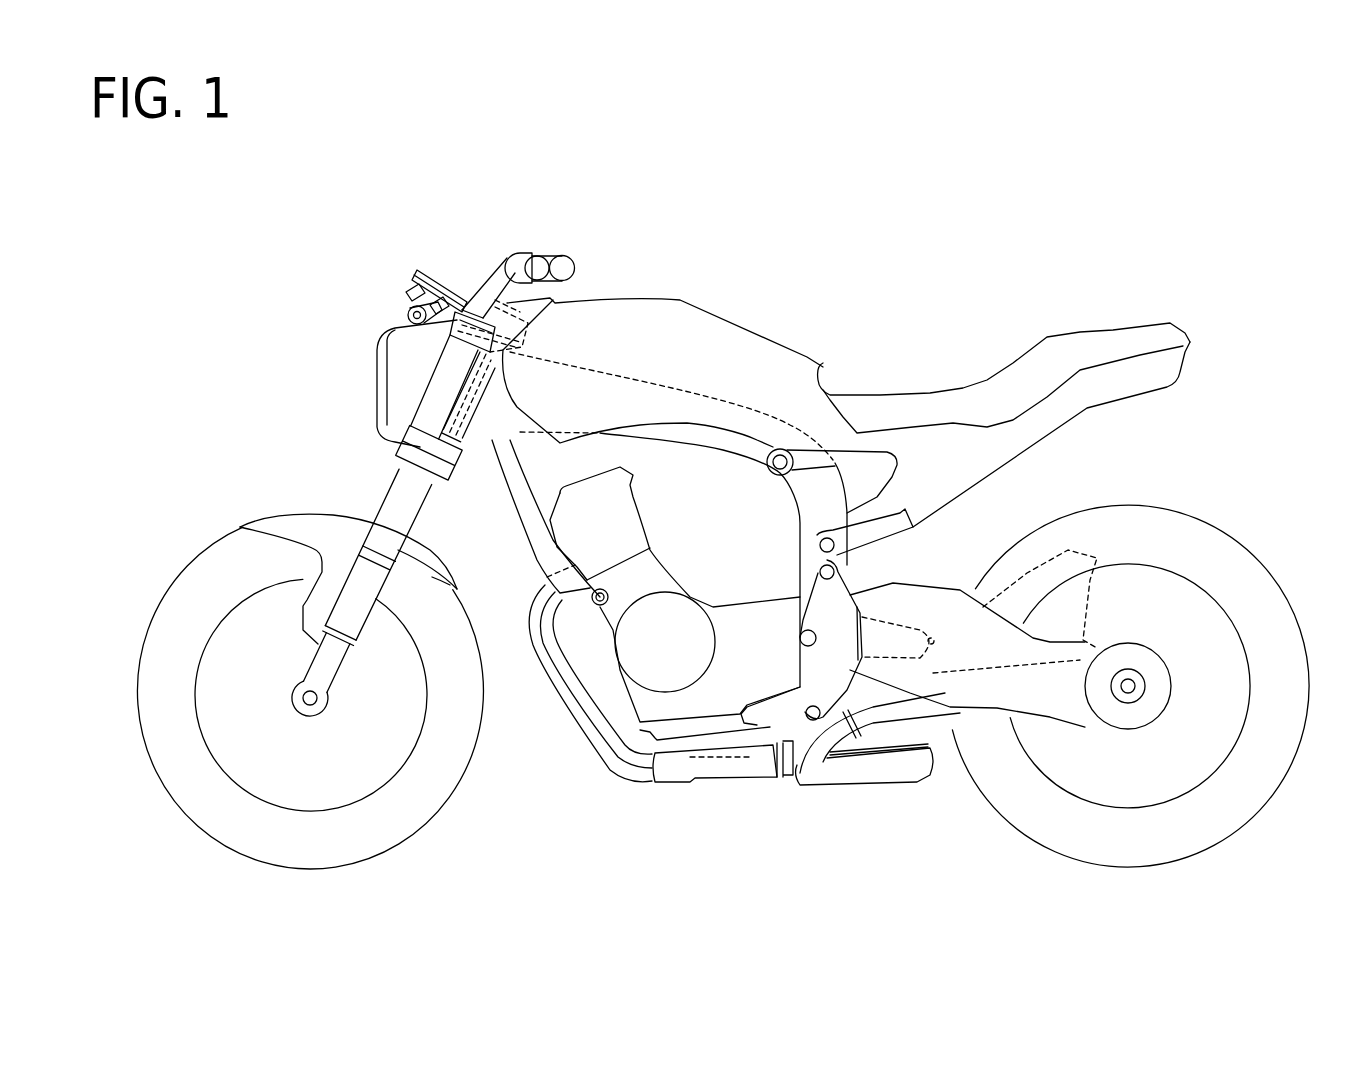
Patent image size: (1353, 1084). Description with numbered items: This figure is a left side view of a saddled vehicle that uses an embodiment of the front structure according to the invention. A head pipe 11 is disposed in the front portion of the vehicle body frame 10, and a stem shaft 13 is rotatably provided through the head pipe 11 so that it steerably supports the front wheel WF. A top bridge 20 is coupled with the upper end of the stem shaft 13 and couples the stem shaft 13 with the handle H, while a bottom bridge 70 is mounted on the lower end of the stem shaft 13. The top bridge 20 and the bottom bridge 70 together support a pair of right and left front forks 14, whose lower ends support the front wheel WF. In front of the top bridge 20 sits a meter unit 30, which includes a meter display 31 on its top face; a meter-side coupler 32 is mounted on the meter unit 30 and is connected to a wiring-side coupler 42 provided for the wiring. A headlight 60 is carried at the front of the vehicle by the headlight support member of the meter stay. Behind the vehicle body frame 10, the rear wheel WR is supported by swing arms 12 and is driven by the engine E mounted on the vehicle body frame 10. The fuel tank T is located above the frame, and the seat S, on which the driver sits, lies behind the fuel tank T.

The vehicle body frame 10 is at (727, 403).
The head pipe 11 is at (490, 370).
The swing arms 12 is at (1063, 702).
The stem shaft 13 is at (473, 397).
The front forks 14 is at (397, 497).
The top bridge 20 is at (488, 303).
The meter unit 30 is at (417, 270).
The meter display 31 is at (430, 273).
The meter-side coupler 32 is at (473, 297).
The wiring-side coupler 42 is at (476, 326).
The headlight 60 is at (377, 392).
The bottom bridge 70 is at (400, 453).
The handle H is at (550, 257).
The fuel tank T is at (690, 300).
The seat S is at (900, 395).
The engine E is at (643, 667).
The front wheel WF is at (178, 583).
The rear wheel WR is at (1230, 528).